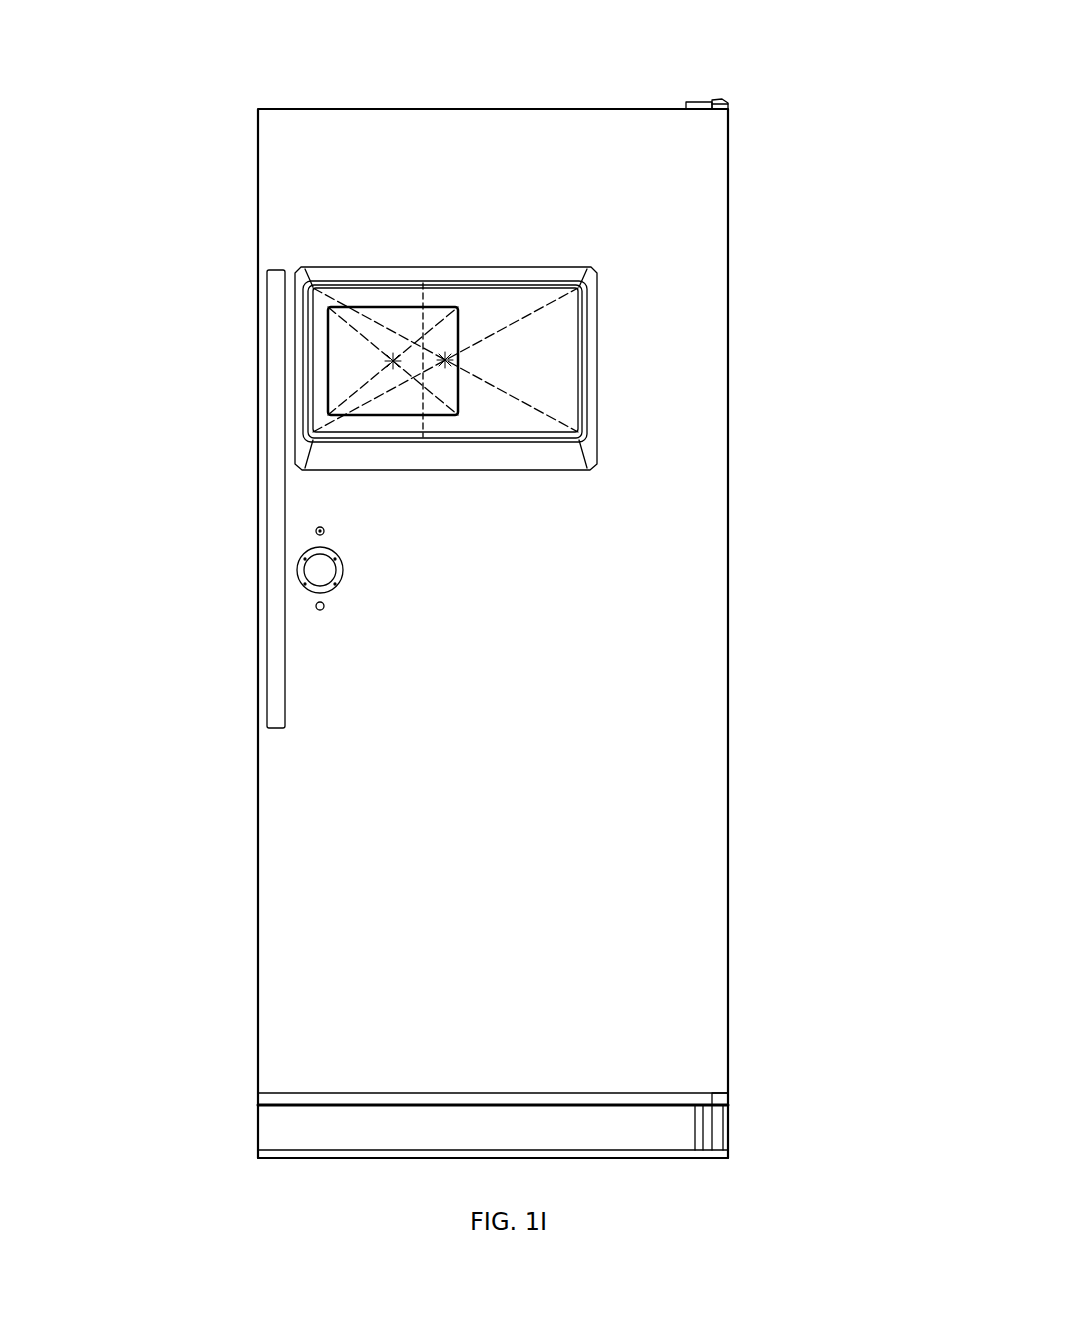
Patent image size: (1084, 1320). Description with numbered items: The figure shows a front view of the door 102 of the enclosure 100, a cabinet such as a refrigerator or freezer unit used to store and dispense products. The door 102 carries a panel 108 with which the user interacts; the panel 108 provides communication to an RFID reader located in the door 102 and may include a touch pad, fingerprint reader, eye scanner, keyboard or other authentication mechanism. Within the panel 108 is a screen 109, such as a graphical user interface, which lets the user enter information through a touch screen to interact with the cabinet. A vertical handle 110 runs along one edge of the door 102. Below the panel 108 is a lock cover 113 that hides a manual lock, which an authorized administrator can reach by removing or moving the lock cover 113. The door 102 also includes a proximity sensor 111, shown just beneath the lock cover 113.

The enclosure 100 is at (738, 151).
The door 102 is at (412, 808).
The panel 108 is at (520, 340).
The screen 109 is at (388, 313).
The handle 110 is at (271, 393).
The proximity sensor 111 is at (316, 607).
The lock cover 113 is at (312, 571).